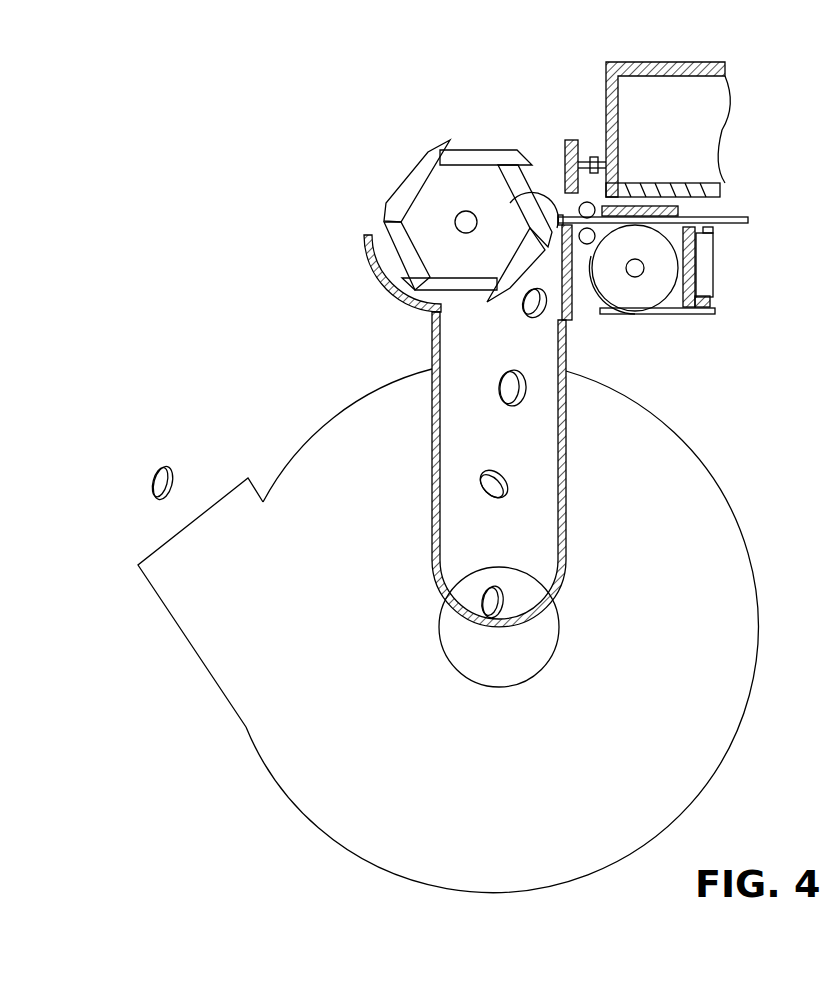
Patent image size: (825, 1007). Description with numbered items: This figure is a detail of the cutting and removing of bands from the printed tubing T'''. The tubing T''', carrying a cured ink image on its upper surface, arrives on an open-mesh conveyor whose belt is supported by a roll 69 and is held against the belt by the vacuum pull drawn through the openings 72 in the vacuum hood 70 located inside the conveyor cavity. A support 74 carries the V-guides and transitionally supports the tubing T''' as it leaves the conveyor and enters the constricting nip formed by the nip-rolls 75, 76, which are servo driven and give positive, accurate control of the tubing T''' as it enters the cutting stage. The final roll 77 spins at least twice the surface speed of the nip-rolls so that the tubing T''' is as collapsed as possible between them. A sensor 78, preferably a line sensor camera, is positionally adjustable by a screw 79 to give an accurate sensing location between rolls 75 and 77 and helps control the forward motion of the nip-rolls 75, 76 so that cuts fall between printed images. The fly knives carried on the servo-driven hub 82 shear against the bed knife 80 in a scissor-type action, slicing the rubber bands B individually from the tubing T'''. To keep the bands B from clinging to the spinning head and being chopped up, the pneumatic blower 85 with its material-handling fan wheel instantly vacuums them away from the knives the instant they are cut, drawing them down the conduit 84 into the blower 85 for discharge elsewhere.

The roll 69 is at (652, 287).
The vacuum hood 70 is at (697, 309).
The openings 72 is at (734, 262).
The support 74 is at (596, 238).
The nip-roll 75 is at (606, 175).
The nip-roll 76 is at (600, 252).
The final roll 77 is at (514, 202).
The sensor 78 is at (566, 148).
The screw 79 is at (587, 162).
The bed knife 80 is at (572, 293).
The hub 82 is at (437, 200).
The conduit 84 is at (566, 362).
The pneumatic blower 85 is at (660, 437).
The rubber bands B is at (543, 318).
The tubing T''' is at (675, 200).